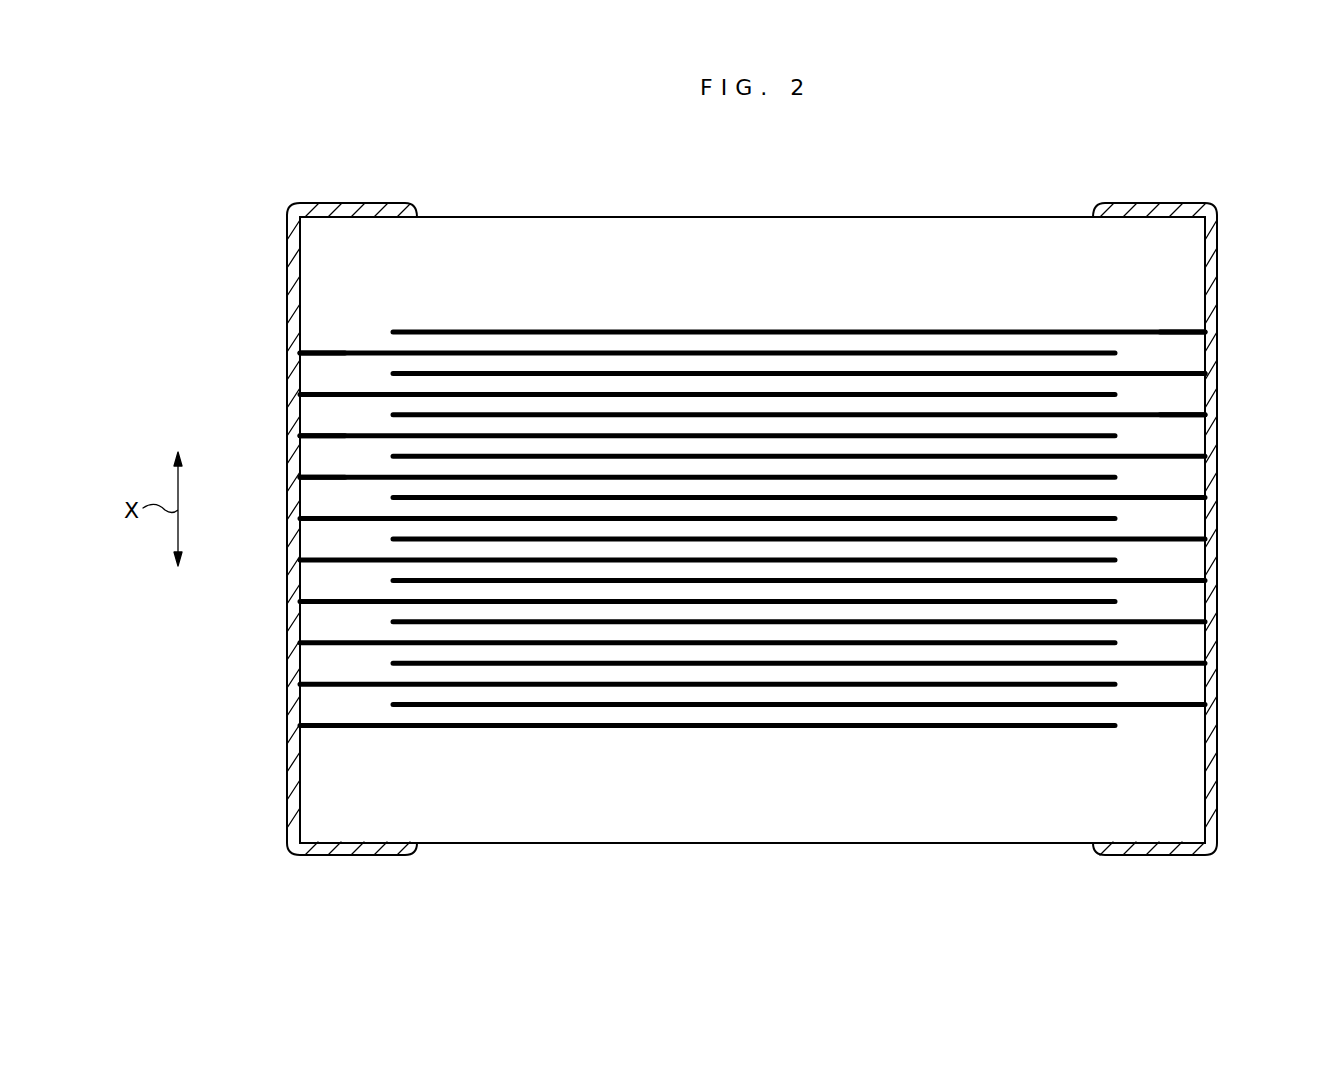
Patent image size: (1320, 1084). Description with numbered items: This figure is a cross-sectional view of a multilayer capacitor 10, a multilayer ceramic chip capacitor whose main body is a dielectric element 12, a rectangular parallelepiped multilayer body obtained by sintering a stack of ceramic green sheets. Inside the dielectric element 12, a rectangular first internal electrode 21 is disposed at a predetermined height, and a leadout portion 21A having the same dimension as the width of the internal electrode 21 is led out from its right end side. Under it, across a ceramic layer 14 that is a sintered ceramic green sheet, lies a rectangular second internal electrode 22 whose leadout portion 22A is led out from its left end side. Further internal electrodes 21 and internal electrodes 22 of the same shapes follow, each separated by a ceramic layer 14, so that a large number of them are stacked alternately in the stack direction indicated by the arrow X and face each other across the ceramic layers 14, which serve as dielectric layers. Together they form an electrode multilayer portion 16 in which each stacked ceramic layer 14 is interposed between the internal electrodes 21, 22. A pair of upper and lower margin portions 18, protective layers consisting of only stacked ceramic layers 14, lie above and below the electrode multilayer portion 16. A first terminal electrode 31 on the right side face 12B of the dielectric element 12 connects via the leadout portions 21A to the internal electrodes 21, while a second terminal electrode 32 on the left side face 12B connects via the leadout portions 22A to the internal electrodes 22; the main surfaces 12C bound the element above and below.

The multilayer capacitor 10 is at (749, 530).
The dielectric element 12 is at (1040, 217).
The side face 12B is at (290, 500).
The main surface of ceramic body 12C is at (870, 217).
The ceramic layer 14 is at (1097, 527).
The electrode multilayer portion 16 is at (749, 520).
The margin portion 18 is at (767, 272).
The internal electrode 21 is at (926, 415).
The leadout portion 21A is at (1158, 410).
The internal electrode 22 is at (557, 440).
The leadout portion 22A is at (341, 474).
The terminal electrode 31 is at (1218, 283).
The terminal electrode 32 is at (290, 312).